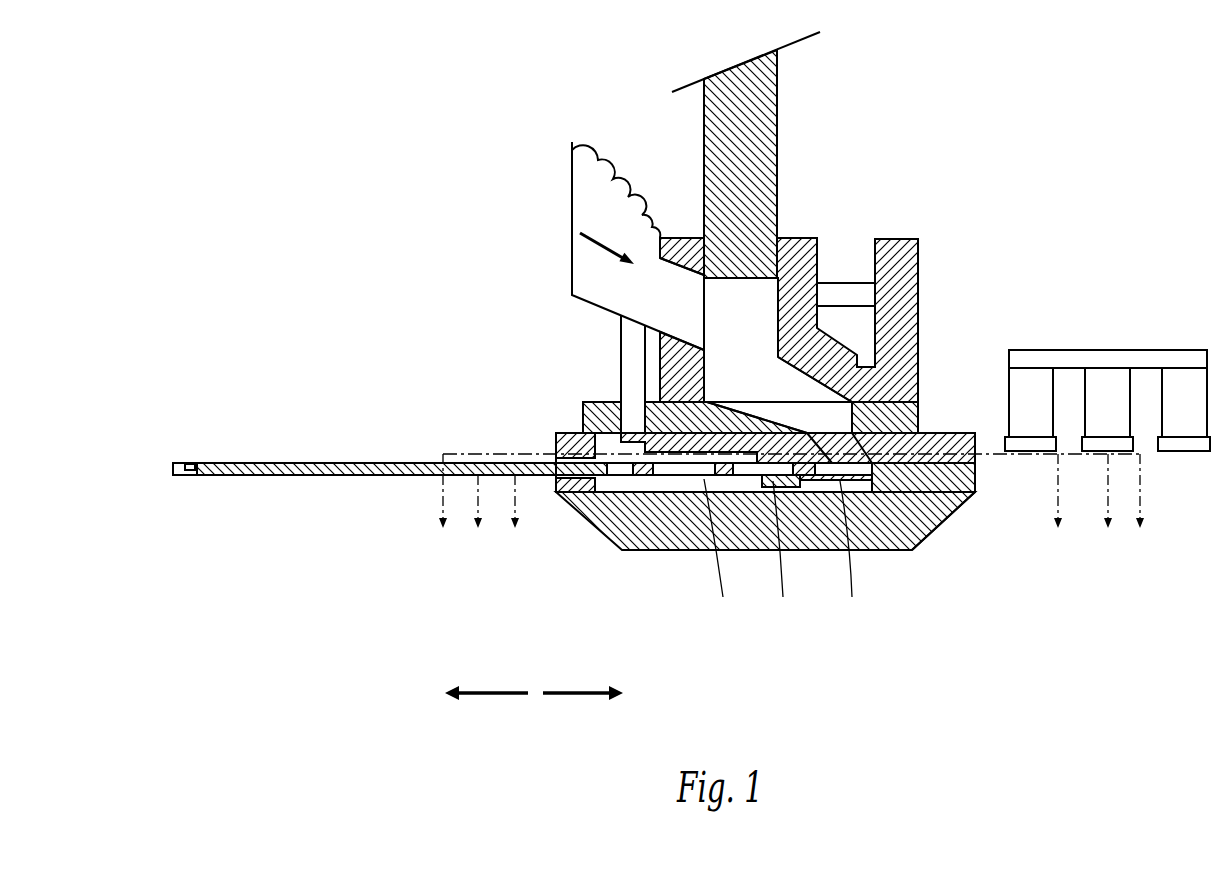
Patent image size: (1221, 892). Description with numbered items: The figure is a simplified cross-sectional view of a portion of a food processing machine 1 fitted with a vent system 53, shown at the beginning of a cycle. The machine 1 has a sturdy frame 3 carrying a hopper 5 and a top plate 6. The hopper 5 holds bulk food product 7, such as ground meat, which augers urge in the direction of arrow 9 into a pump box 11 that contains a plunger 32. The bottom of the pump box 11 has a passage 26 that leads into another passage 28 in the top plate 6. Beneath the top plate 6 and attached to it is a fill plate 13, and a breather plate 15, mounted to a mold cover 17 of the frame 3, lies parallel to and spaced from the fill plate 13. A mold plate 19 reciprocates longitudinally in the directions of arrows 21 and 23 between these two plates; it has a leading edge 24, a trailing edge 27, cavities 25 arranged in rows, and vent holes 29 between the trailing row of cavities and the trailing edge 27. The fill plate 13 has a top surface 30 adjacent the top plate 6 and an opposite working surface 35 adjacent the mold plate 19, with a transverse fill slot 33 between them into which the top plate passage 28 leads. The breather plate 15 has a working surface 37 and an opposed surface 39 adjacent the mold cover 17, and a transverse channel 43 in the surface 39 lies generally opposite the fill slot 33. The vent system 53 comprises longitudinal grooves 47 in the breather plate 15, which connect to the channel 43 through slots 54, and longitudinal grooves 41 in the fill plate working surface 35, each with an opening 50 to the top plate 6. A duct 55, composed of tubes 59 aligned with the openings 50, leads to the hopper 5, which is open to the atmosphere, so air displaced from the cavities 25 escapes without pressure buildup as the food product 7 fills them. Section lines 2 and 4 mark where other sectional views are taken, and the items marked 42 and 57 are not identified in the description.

The machine 1 is at (687, 366).
The frame 3 is at (906, 332).
The hopper 5 is at (593, 308).
The top plate 6 is at (595, 405).
The food product 7 is at (585, 183).
The arrow 9 is at (595, 248).
The pump box 11 is at (752, 290).
The fill plate 13 is at (933, 429).
The breather plate 15 is at (920, 498).
The mold cover 17 is at (643, 550).
The mold plate 19 is at (343, 481).
The arrow 21 is at (572, 692).
The arrow 23 is at (498, 692).
The leading edge 24 is at (983, 480).
The cavities 25 is at (680, 479).
The passage 26 is at (797, 373).
The trailing edge 27 is at (183, 462).
The passage 28 is at (777, 430).
The vent holes 29 is at (612, 480).
The top surface 30 is at (974, 437).
The plunger 32 is at (762, 126).
The fill slot 33 is at (919, 393).
The working surface 35 is at (953, 494).
The working surface 37 is at (556, 453).
The opposed surface 39 is at (573, 493).
The grooves 41 is at (627, 478).
The entry face 42 is at (557, 443).
The channel 43 is at (868, 488).
The grooves 47 is at (744, 479).
The opening 50 is at (582, 418).
The vent system 53 is at (610, 336).
The slots 54 is at (788, 484).
The duct 55 is at (628, 318).
The hook 57 is at (640, 437).
The tubes 59 is at (670, 348).
The section line 2 is at (787, 507).
The section line 4 is at (791, 507).